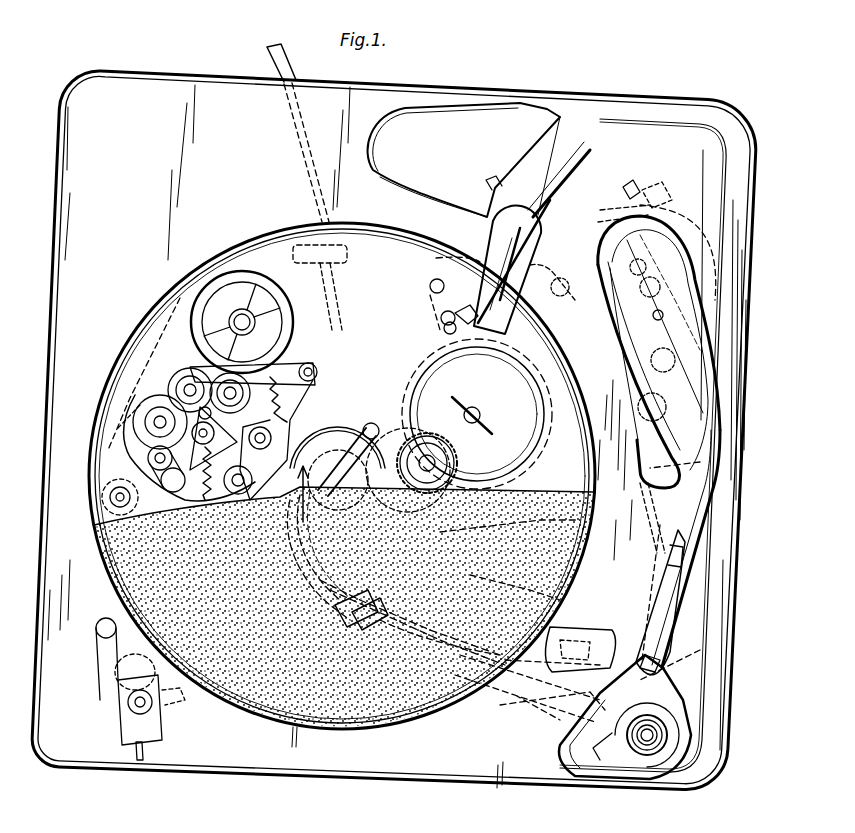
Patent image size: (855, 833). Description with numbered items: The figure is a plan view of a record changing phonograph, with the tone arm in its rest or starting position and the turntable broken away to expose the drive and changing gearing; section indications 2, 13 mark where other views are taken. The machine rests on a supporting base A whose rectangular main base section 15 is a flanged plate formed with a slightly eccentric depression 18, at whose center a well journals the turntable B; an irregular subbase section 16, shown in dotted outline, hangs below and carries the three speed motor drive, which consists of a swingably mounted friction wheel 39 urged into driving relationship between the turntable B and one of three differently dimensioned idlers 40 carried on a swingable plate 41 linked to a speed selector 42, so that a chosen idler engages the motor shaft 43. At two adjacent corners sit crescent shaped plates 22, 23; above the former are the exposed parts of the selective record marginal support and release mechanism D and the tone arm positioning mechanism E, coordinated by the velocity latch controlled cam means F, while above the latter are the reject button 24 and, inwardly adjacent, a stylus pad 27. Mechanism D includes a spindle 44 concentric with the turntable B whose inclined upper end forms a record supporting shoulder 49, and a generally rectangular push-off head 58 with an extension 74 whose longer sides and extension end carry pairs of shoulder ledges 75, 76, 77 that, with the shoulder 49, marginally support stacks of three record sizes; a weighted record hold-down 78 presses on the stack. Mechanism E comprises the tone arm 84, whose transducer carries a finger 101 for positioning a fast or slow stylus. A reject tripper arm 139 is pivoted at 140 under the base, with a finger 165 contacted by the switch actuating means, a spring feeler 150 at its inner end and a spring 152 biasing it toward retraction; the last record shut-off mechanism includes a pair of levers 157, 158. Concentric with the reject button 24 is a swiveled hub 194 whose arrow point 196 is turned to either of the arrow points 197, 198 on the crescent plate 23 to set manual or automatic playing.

The main base section 15 is at (92, 92).
The crescent shaped plate 22 is at (718, 165).
The depression 18 is at (584, 474).
The friction wheel 39 is at (238, 276).
The idlers 40 is at (185, 377).
The swingable plate 41 is at (150, 402).
The motor shaft 43 is at (209, 439).
The subbase section 16 is at (118, 428).
The spindle 44 is at (337, 466).
The record supporting shoulder 49 is at (397, 476).
The section line 2 is at (400, 461).
The extension 74 is at (452, 235).
The shoulder ledges 76 is at (455, 318).
The shoulder ledges 75 is at (633, 185).
The push-off head 58 is at (596, 160).
The shoulder ledges 77 is at (628, 205).
The record hold-down 78 is at (540, 290).
The section line 13 is at (598, 235).
The tone arm 84 is at (712, 388).
The lever 158 is at (703, 462).
The lever 157 is at (648, 540).
The stylus pad 27 is at (585, 640).
The finger 101 is at (660, 685).
The reject button 24 is at (660, 738).
The arrow point 198 is at (672, 710).
The crescent shaped plate 23 is at (685, 696).
The arrow point 196 is at (598, 752).
The swiveled hub 194 is at (648, 772).
The arrow point 197 is at (585, 730).
The spring 152 is at (585, 696).
The finger 165 is at (706, 648).
The pivot 140 is at (520, 650).
The reject tripper arm 139 is at (540, 585).
The spring feeler 150 is at (520, 528).
The speed selector 42 is at (120, 706).
The supporting base A is at (284, 201).
The turntable B is at (278, 635).
The selective record marginal support and release mechanism D is at (506, 168).
The tone arm positioning mechanism E is at (620, 347).
The velocity latch controlled cam means F is at (496, 470).